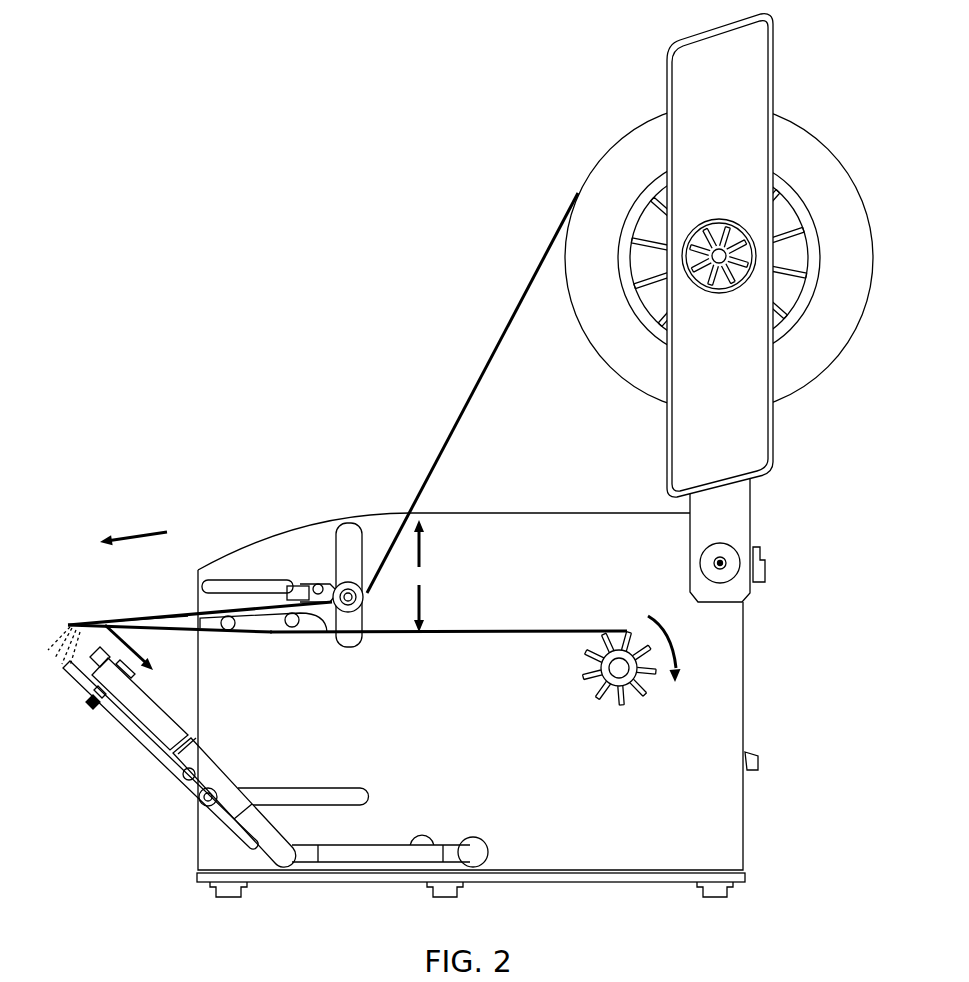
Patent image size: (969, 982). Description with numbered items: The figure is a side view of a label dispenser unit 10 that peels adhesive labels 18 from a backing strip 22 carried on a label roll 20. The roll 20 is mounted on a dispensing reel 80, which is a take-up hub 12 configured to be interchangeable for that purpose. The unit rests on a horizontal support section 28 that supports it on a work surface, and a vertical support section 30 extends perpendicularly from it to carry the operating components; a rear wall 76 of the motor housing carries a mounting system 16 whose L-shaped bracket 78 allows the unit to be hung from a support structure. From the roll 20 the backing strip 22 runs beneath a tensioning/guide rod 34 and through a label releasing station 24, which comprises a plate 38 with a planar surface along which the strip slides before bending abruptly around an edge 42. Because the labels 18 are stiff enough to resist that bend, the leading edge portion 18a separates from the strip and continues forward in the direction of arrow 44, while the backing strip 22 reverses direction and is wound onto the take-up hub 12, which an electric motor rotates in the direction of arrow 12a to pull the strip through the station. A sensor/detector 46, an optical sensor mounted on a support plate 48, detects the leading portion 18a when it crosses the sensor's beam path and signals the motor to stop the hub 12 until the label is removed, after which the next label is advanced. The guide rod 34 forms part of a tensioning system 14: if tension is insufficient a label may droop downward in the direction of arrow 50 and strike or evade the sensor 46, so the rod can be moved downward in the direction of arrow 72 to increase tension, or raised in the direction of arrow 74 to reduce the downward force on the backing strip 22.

The label dispenser unit 10 is at (270, 156).
The take-up hub 12 is at (642, 706).
The arrow 12a is at (678, 636).
The tensioning system 14 is at (380, 520).
The mounting system 16 is at (781, 552).
The adhesive label 18 is at (534, 276).
The leading edge portion 18a is at (83, 622).
The label roll 20 is at (803, 124).
The backing strip 22 is at (490, 360).
The label releasing station 24 is at (197, 598).
The horizontal support section 28 is at (602, 872).
The vertical support section 30 is at (745, 733).
The tensioning/guide rod 34 is at (336, 580).
The plate 38 is at (187, 616).
The edge 42 is at (186, 628).
The arrow 44 is at (146, 530).
The sensor/detector 46 is at (162, 694).
The support plate 48 is at (143, 748).
The arrow 50 is at (160, 655).
The arrow 72 is at (422, 607).
The arrow 74 is at (422, 548).
The rear wall 76 is at (745, 665).
The L-shaped bracket 78 is at (766, 565).
The dispensing reel 80 is at (716, 222).